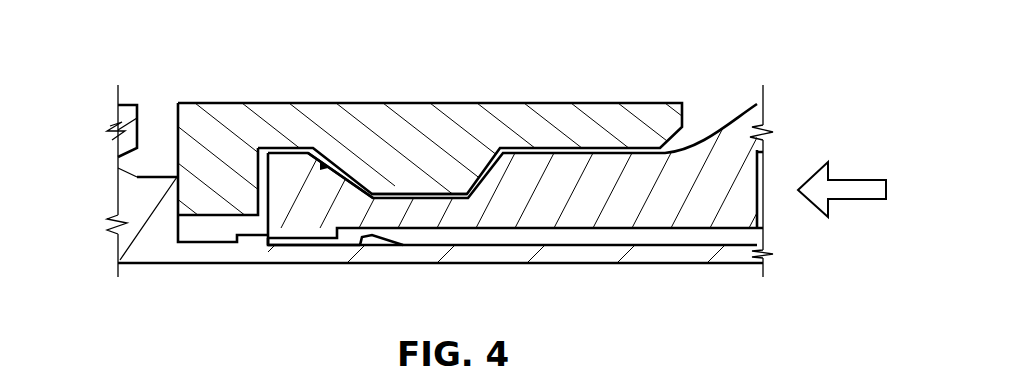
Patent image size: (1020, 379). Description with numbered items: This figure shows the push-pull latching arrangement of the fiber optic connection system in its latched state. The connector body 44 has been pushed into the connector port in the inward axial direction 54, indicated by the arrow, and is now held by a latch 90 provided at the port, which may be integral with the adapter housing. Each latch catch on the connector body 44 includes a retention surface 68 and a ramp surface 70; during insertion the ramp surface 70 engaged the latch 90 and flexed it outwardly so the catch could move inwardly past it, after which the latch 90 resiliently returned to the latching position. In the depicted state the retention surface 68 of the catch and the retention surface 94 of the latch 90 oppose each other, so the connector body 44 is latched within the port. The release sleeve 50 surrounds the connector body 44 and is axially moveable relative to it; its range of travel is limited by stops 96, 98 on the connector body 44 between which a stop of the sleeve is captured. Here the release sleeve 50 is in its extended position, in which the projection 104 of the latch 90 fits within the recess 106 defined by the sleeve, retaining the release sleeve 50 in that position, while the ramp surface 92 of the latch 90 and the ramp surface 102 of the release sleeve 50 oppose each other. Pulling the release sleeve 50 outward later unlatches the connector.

The connector body 44 is at (713, 256).
The release sleeve 50 is at (757, 72).
The inward axial direction 54 is at (858, 180).
The retention surface 68 is at (180, 202).
The ramp surface 70 is at (128, 178).
The latch 90 is at (385, 102).
The ramp surface 92 is at (325, 172).
The retention surface 94 is at (177, 133).
The stop 96 is at (267, 243).
The stop 98 is at (362, 245).
The ramp surface 102 is at (340, 186).
The projection 104 is at (443, 190).
The recess 106 is at (470, 191).